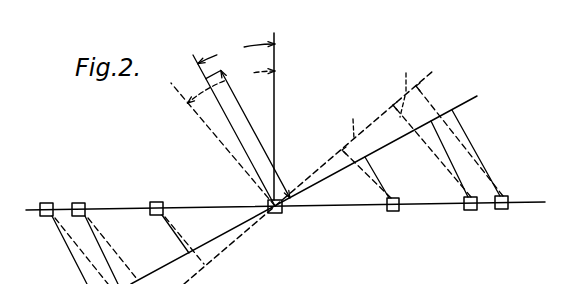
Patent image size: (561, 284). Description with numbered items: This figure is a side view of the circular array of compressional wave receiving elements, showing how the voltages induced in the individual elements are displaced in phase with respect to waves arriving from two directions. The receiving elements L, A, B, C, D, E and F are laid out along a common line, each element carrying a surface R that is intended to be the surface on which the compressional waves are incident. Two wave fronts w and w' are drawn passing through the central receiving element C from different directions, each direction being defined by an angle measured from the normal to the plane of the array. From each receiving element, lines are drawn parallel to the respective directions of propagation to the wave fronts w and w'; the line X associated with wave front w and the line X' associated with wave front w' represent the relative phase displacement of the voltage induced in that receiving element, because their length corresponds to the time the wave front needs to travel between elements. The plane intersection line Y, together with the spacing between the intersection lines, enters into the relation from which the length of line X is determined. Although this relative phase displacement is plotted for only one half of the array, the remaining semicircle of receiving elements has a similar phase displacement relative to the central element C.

The receiving element L is at (74, 236).
The receiving element A is at (104, 236).
The receiving element B is at (177, 226).
The central receiving element C is at (226, 130).
The receiving element D is at (371, 186).
The receiving element E is at (435, 163).
The receiving element F is at (462, 154).
The surfaces R is at (52, 203).
The line x X is at (426, 159).
The line x' X' is at (378, 99).
The plane intersection line Y is at (248, 134).
The wave front w is at (316, 190).
The wave front w' is at (328, 173).